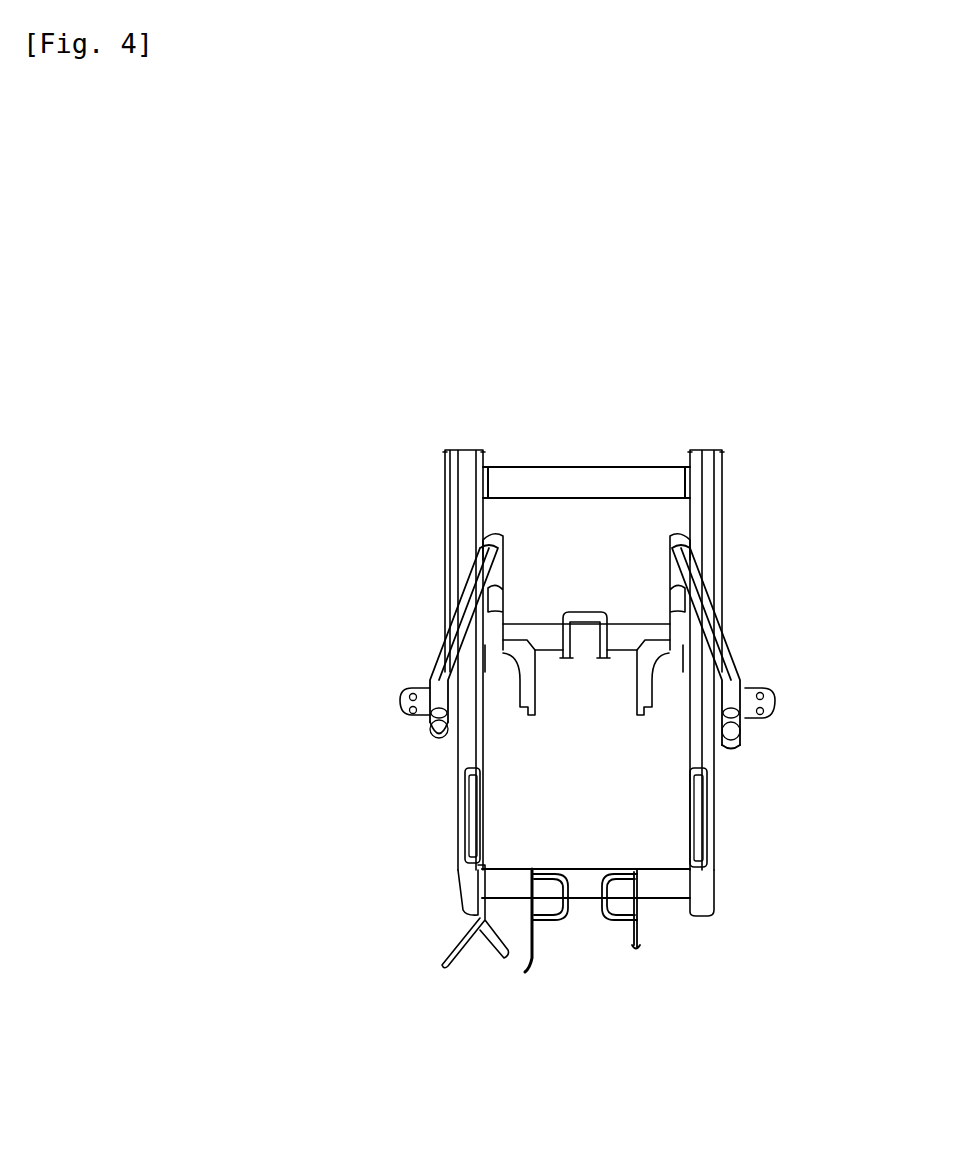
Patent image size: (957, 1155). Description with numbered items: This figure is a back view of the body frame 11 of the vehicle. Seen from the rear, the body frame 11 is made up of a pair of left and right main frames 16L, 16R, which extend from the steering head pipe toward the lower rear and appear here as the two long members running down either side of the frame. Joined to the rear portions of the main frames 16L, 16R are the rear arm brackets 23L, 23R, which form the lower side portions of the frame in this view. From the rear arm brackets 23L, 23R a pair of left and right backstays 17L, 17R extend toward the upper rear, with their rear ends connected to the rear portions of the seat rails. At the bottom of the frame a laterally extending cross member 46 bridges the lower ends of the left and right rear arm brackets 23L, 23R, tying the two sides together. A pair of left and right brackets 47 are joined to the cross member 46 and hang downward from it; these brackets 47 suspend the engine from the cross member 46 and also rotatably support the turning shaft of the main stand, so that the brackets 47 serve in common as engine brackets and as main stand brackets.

The body frame 11 is at (592, 410).
The left main frame 16L is at (447, 546).
The right main frame 16R is at (716, 522).
The left backstay 17L is at (493, 620).
The right backstay 17R is at (672, 622).
The left rear arm bracket 23L is at (459, 834).
The right rear arm bracket 23R is at (716, 822).
The cross member 46 is at (587, 877).
The brackets 47 is at (537, 945).